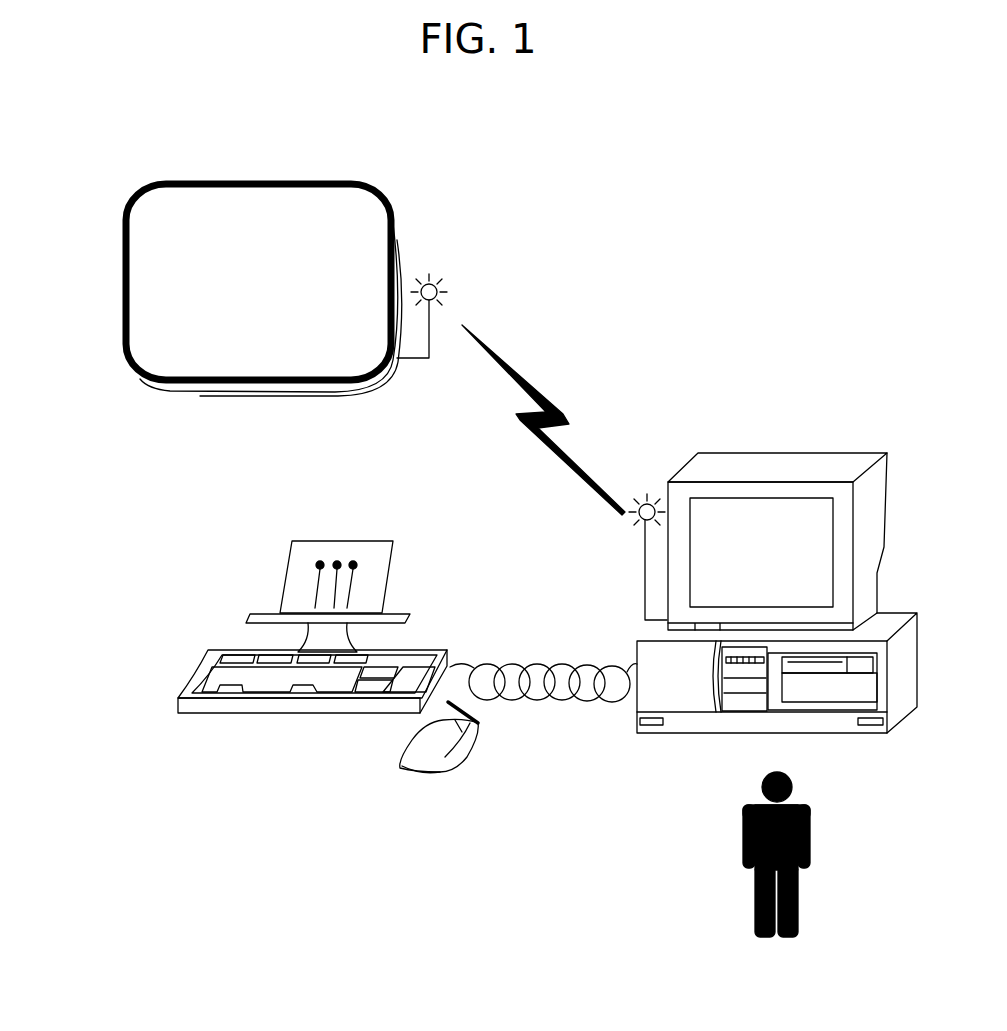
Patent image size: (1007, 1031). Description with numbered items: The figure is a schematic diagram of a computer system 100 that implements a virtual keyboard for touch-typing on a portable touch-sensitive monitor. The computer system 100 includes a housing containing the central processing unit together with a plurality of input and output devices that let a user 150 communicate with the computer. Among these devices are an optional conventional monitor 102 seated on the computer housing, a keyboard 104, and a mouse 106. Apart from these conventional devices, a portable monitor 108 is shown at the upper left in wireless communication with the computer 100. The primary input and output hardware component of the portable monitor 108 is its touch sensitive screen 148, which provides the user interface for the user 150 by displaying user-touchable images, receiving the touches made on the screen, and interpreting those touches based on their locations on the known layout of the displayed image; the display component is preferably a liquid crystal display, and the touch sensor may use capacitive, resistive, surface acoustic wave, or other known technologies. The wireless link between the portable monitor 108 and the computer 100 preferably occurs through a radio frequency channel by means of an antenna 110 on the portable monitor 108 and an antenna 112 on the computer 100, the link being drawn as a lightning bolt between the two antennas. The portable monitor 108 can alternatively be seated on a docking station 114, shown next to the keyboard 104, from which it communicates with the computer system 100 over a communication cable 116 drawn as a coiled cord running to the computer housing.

The computer system 100 is at (636, 643).
The conventional monitor 102 is at (780, 466).
The keyboard 104 is at (185, 695).
The mouse 106 is at (460, 742).
The portable monitor 108 is at (123, 342).
The antenna 110 is at (442, 268).
The antenna 112 is at (647, 500).
The docking station 114 is at (410, 617).
The communication cable 116 is at (593, 662).
The touch sensitive screen 148 is at (228, 225).
The user 150 is at (808, 920).